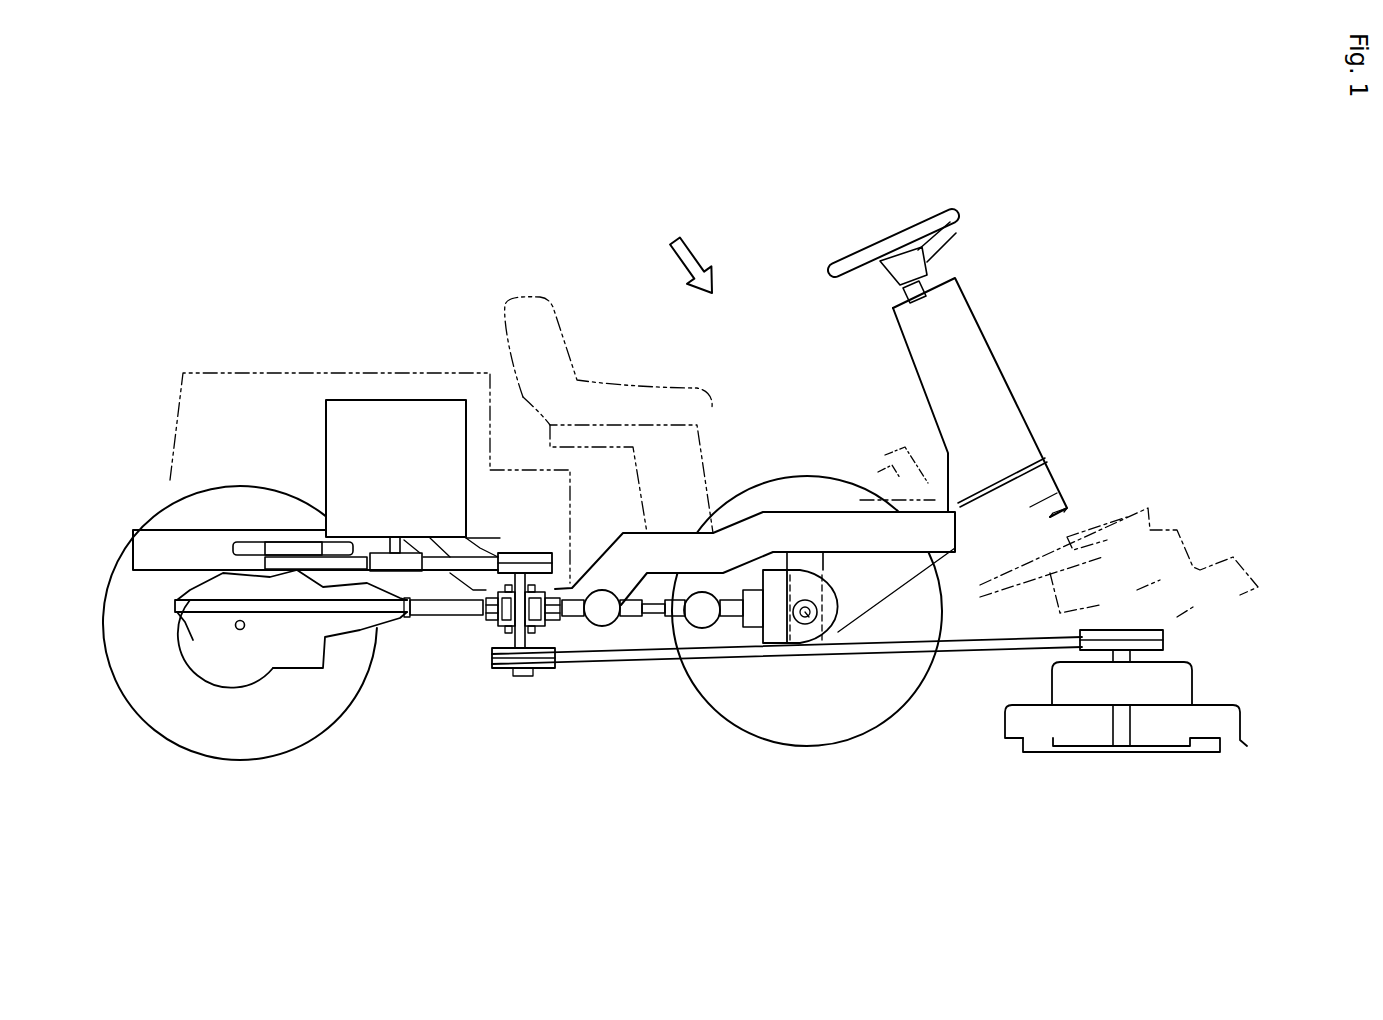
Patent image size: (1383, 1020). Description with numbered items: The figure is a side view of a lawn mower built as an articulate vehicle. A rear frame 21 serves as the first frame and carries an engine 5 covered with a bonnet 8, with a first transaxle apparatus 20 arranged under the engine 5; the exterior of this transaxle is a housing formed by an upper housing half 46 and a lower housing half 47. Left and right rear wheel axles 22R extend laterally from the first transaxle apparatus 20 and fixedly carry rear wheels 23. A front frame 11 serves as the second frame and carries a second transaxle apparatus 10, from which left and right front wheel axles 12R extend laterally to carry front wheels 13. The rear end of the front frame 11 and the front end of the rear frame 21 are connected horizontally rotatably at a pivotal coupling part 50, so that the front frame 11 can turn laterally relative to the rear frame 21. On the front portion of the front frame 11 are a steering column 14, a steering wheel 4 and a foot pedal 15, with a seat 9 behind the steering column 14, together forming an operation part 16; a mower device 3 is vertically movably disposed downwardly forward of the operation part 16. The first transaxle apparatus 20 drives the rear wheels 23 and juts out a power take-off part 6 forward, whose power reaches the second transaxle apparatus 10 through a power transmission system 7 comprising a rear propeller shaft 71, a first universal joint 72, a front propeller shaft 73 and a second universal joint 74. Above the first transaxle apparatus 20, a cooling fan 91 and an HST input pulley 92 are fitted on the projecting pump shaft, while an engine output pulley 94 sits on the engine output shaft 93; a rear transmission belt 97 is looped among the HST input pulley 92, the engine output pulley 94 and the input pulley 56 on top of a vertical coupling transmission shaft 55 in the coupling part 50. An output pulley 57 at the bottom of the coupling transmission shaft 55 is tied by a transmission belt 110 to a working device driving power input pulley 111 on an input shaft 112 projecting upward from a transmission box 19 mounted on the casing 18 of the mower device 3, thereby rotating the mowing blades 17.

The mower device 3 is at (1205, 532).
The steering wheel 4 is at (952, 186).
The engine 5 is at (414, 412).
The power take-off part 6 is at (394, 648).
The power transmission system 7 is at (486, 658).
The bonnet 8 is at (291, 372).
The seat 9 is at (557, 300).
The second transaxle apparatus 10 is at (752, 632).
The front frame 11 is at (646, 536).
The right front wheel axle 12R is at (808, 622).
The front wheels 13 is at (664, 630).
The steering column 14 is at (1005, 360).
The foot pedal 15 is at (907, 462).
The operation part 16 is at (682, 253).
The mowing blades 17 is at (1213, 760).
The casing 18 is at (1008, 733).
The transmission box 19 is at (1052, 683).
The first transaxle apparatus 20 is at (182, 641).
The rear frame 21 is at (161, 539).
The right rear wheel axle 22R is at (241, 630).
The rear wheels 23 is at (345, 722).
The upper housing half 46 is at (196, 597).
The lower housing half 47 is at (215, 660).
The pivotal coupling part 50 is at (583, 540).
The coupling transmission shaft 55 is at (519, 580).
The input pulley 56 is at (540, 553).
The output pulley 57 is at (519, 676).
The rear propeller shaft 71 is at (430, 622).
The first universal joint 72 is at (602, 647).
The front propeller shaft 73 is at (650, 614).
The second universal joint 74 is at (718, 640).
The cooling fan 91 is at (246, 541).
The HST input pulley 92 is at (282, 566).
The output shaft 93 is at (392, 548).
The engine output pulley 94 is at (411, 546).
The rear transmission belt 97 is at (481, 548).
The transmission belt 110 is at (1020, 633).
The working device driving power input pulley 111 is at (1145, 631).
The input shaft 112 is at (1163, 662).